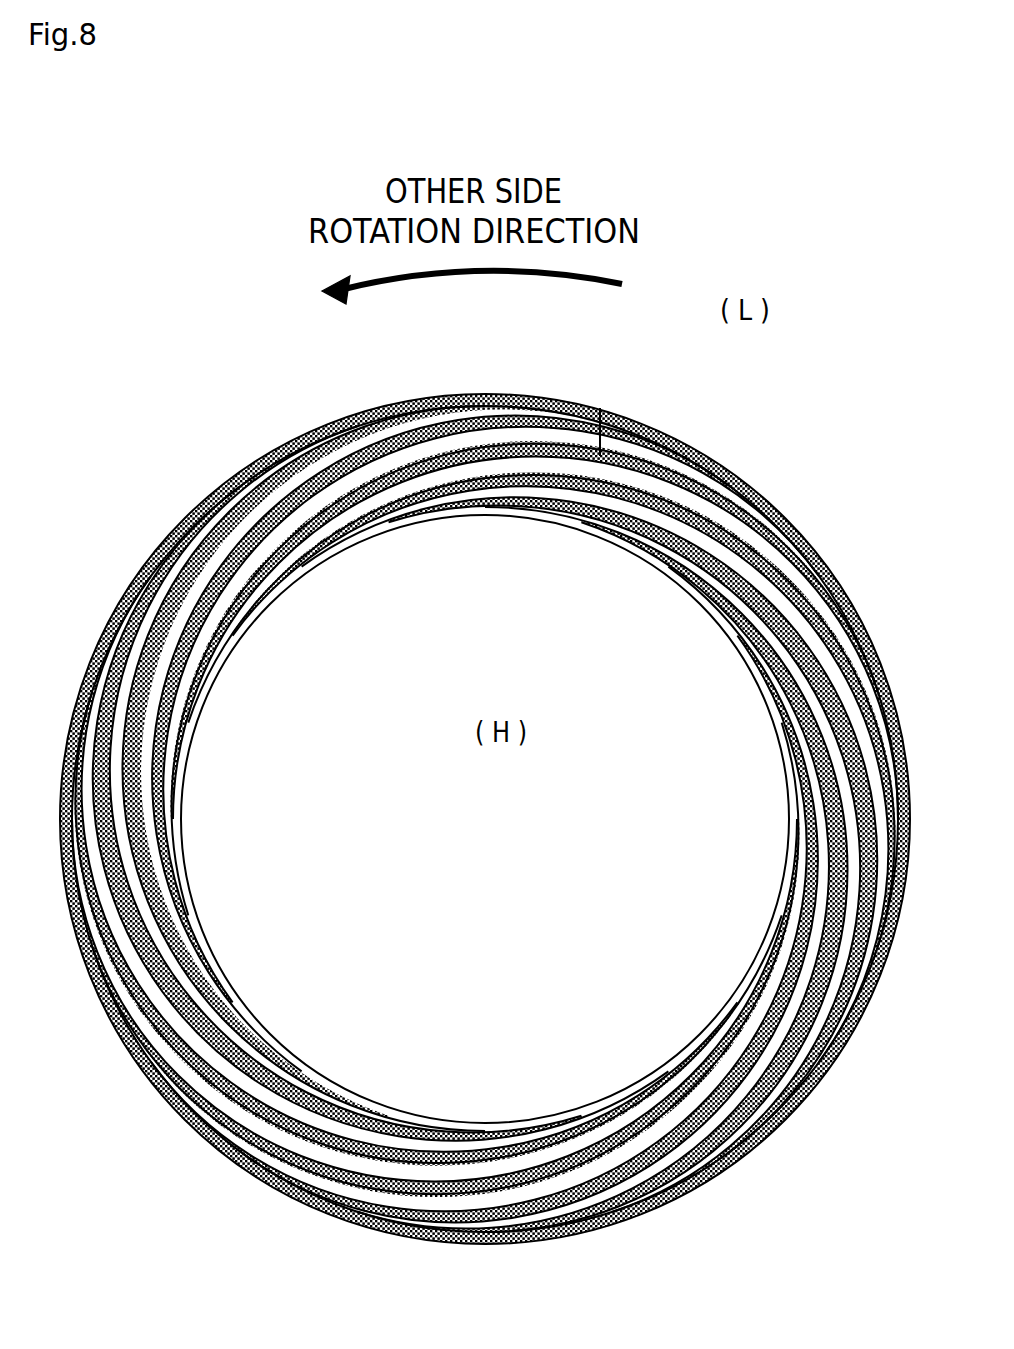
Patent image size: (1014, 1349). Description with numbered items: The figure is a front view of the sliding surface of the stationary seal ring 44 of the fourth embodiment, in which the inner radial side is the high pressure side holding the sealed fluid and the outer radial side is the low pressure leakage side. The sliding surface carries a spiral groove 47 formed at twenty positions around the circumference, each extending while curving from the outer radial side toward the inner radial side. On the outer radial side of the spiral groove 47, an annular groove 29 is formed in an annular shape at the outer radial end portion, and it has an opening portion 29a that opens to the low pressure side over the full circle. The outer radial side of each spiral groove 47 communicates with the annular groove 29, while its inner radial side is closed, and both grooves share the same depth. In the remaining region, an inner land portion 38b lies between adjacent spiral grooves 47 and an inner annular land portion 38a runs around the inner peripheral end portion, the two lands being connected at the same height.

The annular groove 29 is at (392, 399).
The opening portion 29a is at (500, 396).
The stationary seal ring 44 is at (716, 426).
The spiral groove 47 is at (603, 414).
The inner annular land portion 38a is at (424, 522).
The inner land portion 38b is at (178, 579).